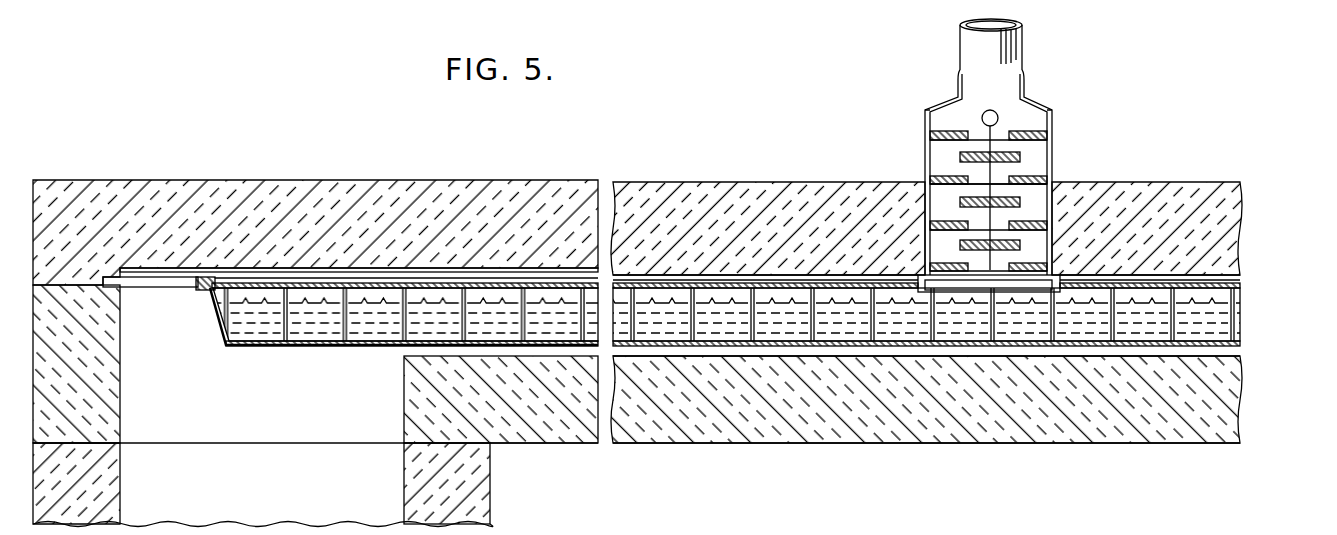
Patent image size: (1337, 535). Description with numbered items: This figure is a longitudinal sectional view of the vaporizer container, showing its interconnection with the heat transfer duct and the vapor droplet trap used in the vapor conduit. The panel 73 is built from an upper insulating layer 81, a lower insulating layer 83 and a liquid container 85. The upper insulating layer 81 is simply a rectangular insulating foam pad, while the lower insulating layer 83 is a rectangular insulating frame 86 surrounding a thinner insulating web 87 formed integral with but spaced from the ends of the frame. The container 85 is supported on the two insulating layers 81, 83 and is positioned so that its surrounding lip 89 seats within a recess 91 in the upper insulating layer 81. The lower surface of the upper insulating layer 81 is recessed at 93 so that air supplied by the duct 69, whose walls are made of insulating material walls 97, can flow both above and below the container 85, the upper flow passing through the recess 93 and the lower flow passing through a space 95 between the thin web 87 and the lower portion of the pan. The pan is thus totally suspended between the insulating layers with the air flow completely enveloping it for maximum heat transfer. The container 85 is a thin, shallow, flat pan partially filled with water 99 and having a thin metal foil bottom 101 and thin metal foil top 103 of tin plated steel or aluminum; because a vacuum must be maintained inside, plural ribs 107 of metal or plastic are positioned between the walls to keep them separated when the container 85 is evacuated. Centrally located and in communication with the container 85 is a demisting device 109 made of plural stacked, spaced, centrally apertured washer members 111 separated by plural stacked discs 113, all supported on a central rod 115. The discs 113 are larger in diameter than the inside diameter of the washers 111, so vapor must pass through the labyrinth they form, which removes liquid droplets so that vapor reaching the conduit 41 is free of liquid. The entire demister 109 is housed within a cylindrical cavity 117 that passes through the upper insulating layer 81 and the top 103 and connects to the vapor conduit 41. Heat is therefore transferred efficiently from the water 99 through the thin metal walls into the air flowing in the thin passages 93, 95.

The vapor conduit 41 is at (1024, 48).
The duct 69 is at (370, 492).
The panel 73 is at (1172, 180).
The upper insulating layer 81 is at (690, 183).
The lower insulating layer 83 is at (880, 445).
The liquid container 85 is at (974, 343).
The insulating frame 86 is at (120, 413).
The insulating web 87 is at (1120, 445).
The lip 89 is at (200, 292).
The recess 91 is at (125, 290).
The recess 93 is at (365, 272).
The space 95 is at (1030, 358).
The insulating material walls 97 is at (120, 492).
The water 99 is at (1215, 320).
The metal foil bottom 101 is at (1205, 347).
The metal foil top 103 is at (1240, 291).
The ribs 107 is at (418, 292).
The demisting device 109 is at (1047, 180).
The washer members 111 is at (932, 198).
The discs 113 is at (1047, 135).
The central rod 115 is at (1047, 157).
The cylindrical cavity 117 is at (925, 240).